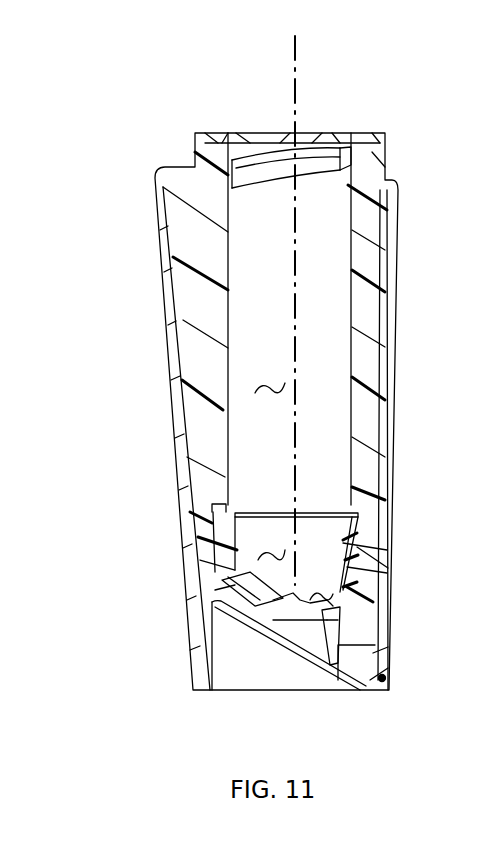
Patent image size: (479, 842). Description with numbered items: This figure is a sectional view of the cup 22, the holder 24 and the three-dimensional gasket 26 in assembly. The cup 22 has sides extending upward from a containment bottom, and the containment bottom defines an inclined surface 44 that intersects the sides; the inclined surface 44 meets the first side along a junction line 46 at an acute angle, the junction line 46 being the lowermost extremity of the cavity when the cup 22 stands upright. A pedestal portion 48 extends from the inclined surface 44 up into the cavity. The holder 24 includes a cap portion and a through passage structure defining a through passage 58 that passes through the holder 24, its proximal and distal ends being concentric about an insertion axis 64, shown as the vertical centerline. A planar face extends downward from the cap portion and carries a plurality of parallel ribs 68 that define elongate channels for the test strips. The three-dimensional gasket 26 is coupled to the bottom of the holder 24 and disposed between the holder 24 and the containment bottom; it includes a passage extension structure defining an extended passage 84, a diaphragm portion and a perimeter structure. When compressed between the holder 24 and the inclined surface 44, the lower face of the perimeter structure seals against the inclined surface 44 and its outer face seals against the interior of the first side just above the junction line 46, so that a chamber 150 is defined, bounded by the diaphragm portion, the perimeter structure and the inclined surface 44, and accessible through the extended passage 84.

The cup 22 is at (163, 326).
The holder 24 is at (168, 168).
The three-dimensional gasket 26 is at (362, 522).
The inclined surface 44 is at (232, 580).
The junction line 46 is at (382, 678).
The pedestal portion 48 is at (334, 616).
The through passage 58 is at (262, 398).
The insertion axis 64 is at (298, 52).
The parallel ribs 68 is at (383, 410).
The extended passage 84 is at (268, 555).
The chamber 150 is at (338, 598).